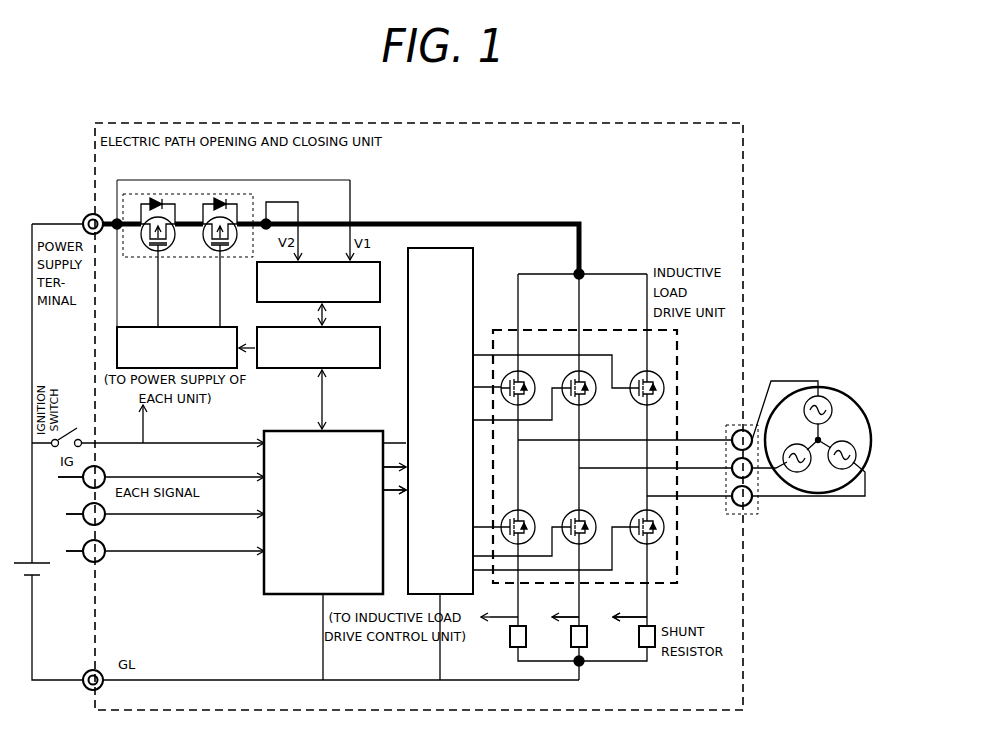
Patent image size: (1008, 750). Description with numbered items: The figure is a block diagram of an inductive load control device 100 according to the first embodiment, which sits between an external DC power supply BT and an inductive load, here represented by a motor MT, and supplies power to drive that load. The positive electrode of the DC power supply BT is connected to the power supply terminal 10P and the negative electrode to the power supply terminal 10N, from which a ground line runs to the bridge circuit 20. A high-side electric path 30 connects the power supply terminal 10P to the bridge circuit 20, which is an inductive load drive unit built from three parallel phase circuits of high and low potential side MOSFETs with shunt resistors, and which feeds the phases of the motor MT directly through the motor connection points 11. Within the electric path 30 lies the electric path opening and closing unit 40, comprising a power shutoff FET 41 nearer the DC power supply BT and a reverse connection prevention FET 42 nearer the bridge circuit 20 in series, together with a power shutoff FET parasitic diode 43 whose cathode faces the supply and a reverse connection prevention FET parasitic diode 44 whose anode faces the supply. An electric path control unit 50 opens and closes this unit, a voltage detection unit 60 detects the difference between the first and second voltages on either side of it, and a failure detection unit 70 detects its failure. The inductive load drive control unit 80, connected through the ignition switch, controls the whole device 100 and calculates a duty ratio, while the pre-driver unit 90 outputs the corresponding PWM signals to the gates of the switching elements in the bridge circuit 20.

The inductive load control device 100 is at (745, 197).
The power supply terminal 10P is at (87, 214).
The power supply terminal 10N is at (88, 688).
The electric path 30 is at (404, 218).
The electric path opening and closing unit 40 is at (191, 193).
The power shutoff FET 41 is at (160, 252).
The reverse connection prevention FET 42 is at (220, 252).
The power shutoff FET parasitic diode 43 is at (156, 198).
The reverse connection prevention FET parasitic diode 44 is at (226, 198).
The electric path control unit 50 is at (181, 325).
The voltage detection unit 60 is at (322, 260).
The failure detection unit 70 is at (328, 372).
The inductive load drive control unit 80 is at (276, 596).
The pre-driver unit 90 is at (475, 280).
The bridge circuit 20 is at (679, 392).
The motor connection points 11 is at (738, 516).
The motor MT is at (818, 387).
The DC power supply BT is at (50, 452).